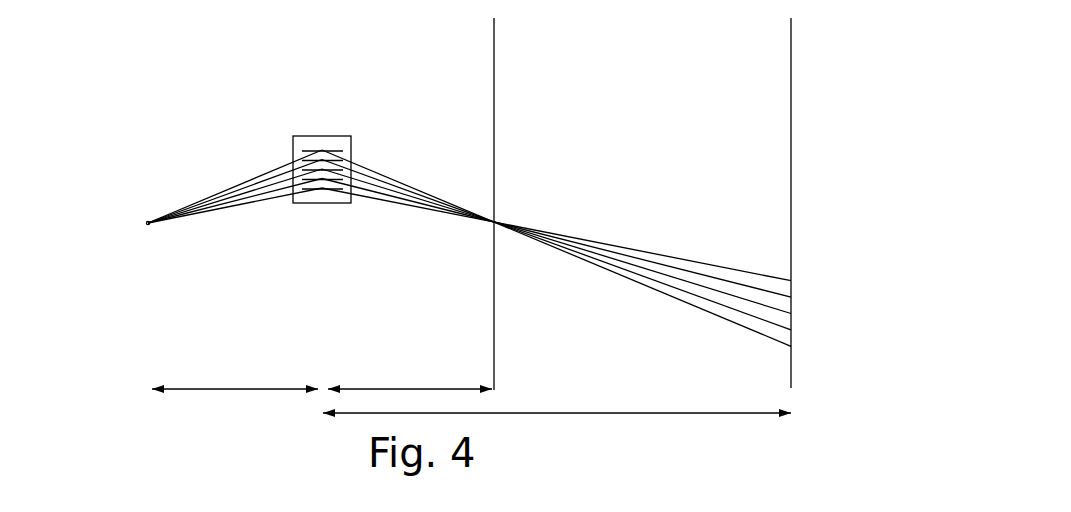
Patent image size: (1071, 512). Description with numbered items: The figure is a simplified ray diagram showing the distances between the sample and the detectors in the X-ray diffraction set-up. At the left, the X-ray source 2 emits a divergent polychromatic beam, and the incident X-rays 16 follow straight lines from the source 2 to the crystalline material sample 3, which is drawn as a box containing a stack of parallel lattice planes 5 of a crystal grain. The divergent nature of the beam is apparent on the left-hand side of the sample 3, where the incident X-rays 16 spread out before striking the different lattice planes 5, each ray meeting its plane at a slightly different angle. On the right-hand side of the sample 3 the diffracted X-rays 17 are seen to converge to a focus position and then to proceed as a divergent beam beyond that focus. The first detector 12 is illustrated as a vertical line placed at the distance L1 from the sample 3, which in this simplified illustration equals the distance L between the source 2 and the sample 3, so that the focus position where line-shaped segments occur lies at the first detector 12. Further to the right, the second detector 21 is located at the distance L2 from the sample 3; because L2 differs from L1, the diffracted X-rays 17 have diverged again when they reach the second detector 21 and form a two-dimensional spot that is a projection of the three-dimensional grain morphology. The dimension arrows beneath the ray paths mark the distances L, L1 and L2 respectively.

The X-ray source 2 is at (148, 225).
The crystalline material sample 3 is at (327, 141).
The lattice planes 5 is at (338, 151).
The first detector 12 is at (494, 78).
The incident X-rays 16 is at (247, 181).
The diffracted X-rays 17 is at (370, 170).
The second detector 21 is at (791, 179).
The distance between X-ray source and sample L is at (264, 389).
The distance between sample and first detector L1 is at (409, 389).
The distance between sample and second detector L2 is at (605, 413).